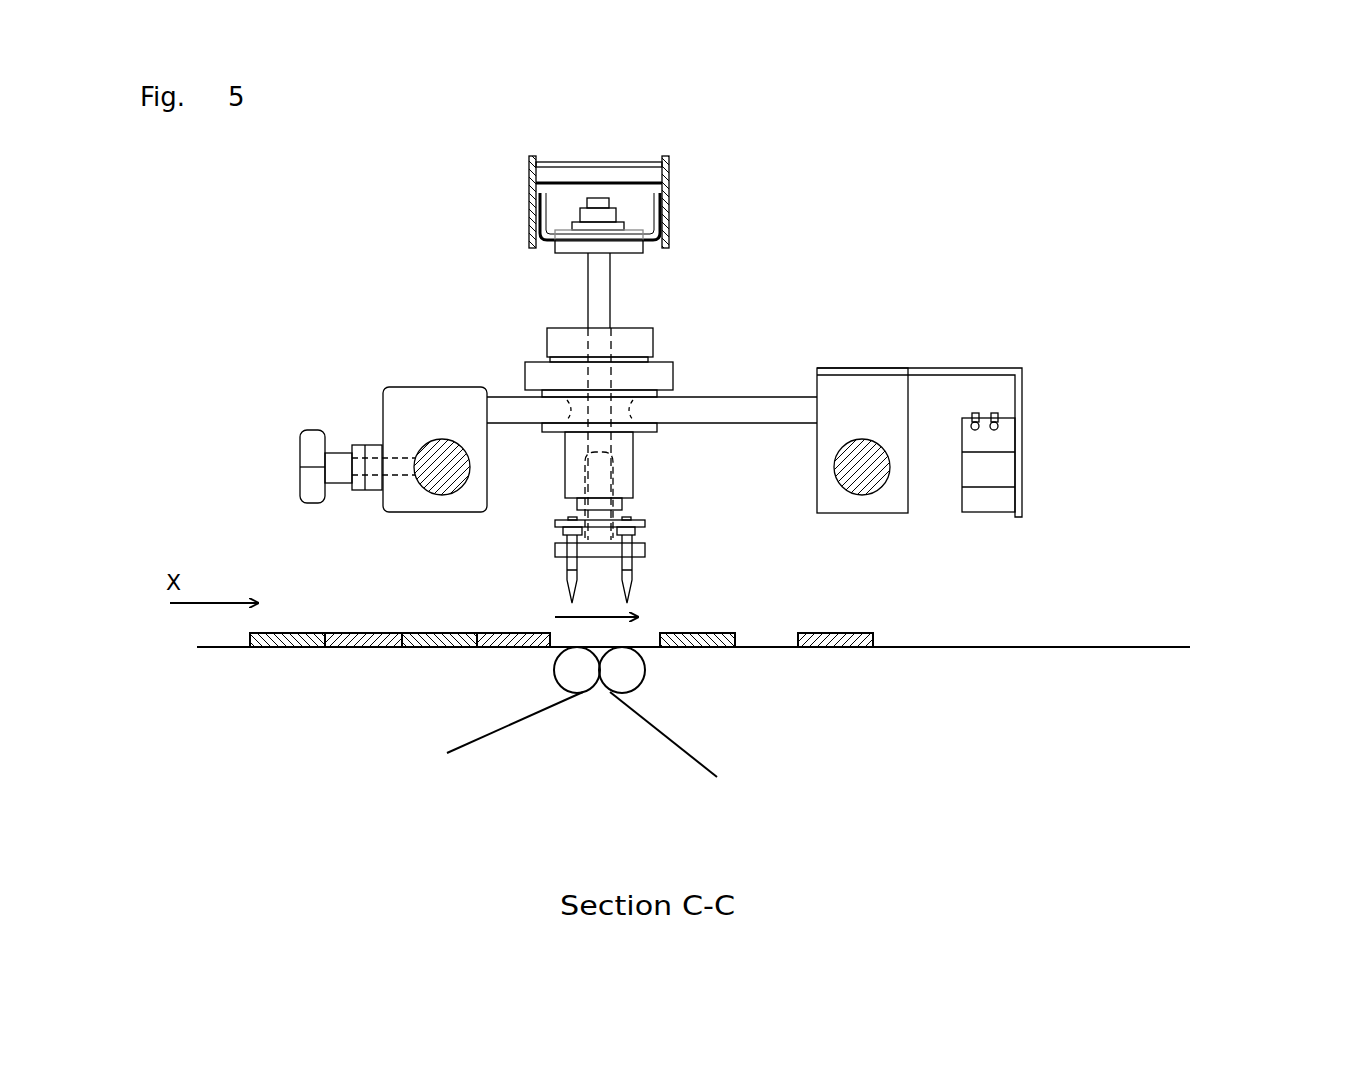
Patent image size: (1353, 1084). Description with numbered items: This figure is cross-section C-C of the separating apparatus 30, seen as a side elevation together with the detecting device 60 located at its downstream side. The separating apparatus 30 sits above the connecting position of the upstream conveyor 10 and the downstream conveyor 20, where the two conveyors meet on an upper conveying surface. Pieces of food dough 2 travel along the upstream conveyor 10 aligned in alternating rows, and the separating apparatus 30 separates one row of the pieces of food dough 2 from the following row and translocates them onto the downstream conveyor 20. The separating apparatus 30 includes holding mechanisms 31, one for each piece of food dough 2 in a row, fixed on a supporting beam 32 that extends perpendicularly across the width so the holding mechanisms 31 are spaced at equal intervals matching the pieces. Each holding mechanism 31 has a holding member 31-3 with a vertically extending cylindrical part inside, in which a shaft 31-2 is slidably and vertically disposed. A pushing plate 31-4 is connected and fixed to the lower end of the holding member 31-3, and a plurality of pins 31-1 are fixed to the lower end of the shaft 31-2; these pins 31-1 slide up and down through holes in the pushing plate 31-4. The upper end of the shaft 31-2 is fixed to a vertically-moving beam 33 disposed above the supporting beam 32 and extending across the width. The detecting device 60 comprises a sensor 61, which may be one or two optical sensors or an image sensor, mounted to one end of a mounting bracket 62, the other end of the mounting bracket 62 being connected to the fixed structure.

The piece of food dough 2 is at (413, 647).
The upstream conveyor 10 is at (435, 693).
The downstream conveyor 20 is at (703, 693).
The separating apparatus 30 is at (870, 214).
The holding mechanism 31 is at (528, 513).
The pin 31-1 is at (630, 578).
The shaft 31-2 is at (600, 305).
The holding member 31-3 is at (573, 457).
The pushing plate 31-4 is at (555, 553).
The supporting beam 32 is at (635, 378).
The vertically-moving beam 33 is at (530, 213).
The detecting device 60 is at (1068, 447).
The sensor 61 is at (990, 470).
The mounting bracket 62 is at (942, 375).